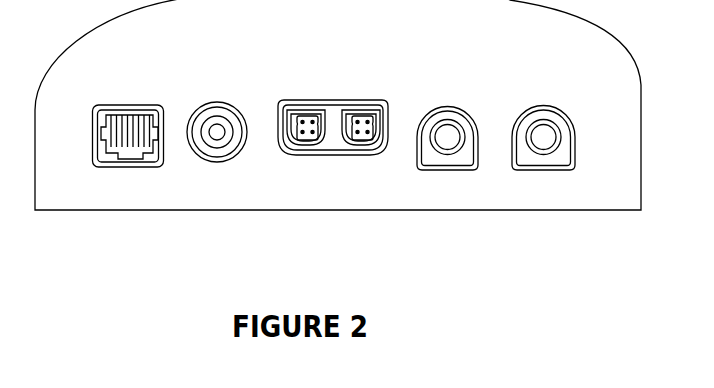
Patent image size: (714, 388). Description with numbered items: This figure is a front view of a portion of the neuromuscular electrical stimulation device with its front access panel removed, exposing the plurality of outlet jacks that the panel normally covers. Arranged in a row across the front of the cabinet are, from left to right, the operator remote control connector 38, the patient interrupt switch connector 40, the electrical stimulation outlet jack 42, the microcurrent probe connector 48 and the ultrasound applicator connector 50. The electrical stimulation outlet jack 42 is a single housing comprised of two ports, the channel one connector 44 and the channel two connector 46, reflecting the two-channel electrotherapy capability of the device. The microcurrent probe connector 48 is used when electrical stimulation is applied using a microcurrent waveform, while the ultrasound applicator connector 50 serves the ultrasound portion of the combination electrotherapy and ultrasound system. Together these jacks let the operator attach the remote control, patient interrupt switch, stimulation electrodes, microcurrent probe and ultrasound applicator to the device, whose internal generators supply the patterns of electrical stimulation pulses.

The operator remote control connector 38 is at (129, 102).
The patient interrupt switch connector 40 is at (227, 101).
The electrical stimulation outlet jack 42 is at (340, 100).
The channel 1 connector 44 is at (307, 142).
The channel 2 connector 46 is at (362, 142).
The microcurrent probe connector 48 is at (452, 106).
The ultrasound applicator connector 50 is at (553, 106).